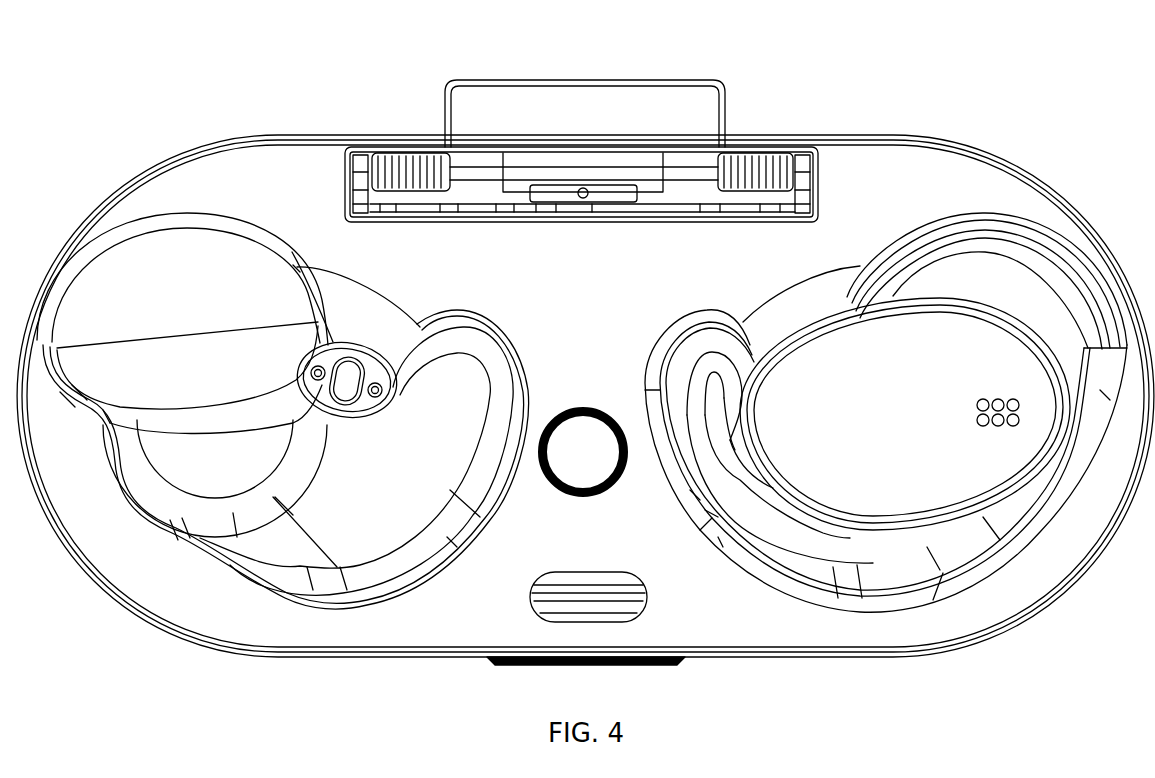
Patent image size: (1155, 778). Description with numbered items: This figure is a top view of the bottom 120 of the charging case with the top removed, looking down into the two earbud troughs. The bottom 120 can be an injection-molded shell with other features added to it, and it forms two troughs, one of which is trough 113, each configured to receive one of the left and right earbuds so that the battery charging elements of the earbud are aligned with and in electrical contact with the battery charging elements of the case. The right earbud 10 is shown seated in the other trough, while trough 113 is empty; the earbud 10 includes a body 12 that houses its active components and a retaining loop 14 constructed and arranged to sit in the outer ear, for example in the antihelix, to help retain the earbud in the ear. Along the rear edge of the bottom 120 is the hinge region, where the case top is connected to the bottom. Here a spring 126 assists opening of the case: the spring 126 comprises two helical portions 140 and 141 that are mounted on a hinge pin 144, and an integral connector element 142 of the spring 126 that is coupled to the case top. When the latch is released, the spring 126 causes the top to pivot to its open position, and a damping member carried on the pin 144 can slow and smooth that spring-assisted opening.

The earbud 10 is at (1036, 522).
The body 12 is at (834, 372).
The retaining loop 14 is at (725, 443).
The trough 113 is at (172, 377).
The bottom 120 is at (948, 160).
The spring 126 is at (752, 150).
The helical portion 140 is at (752, 186).
The helical portion 141 is at (382, 152).
The integral connector element 142 is at (547, 80).
The hinge pin 144 is at (473, 167).